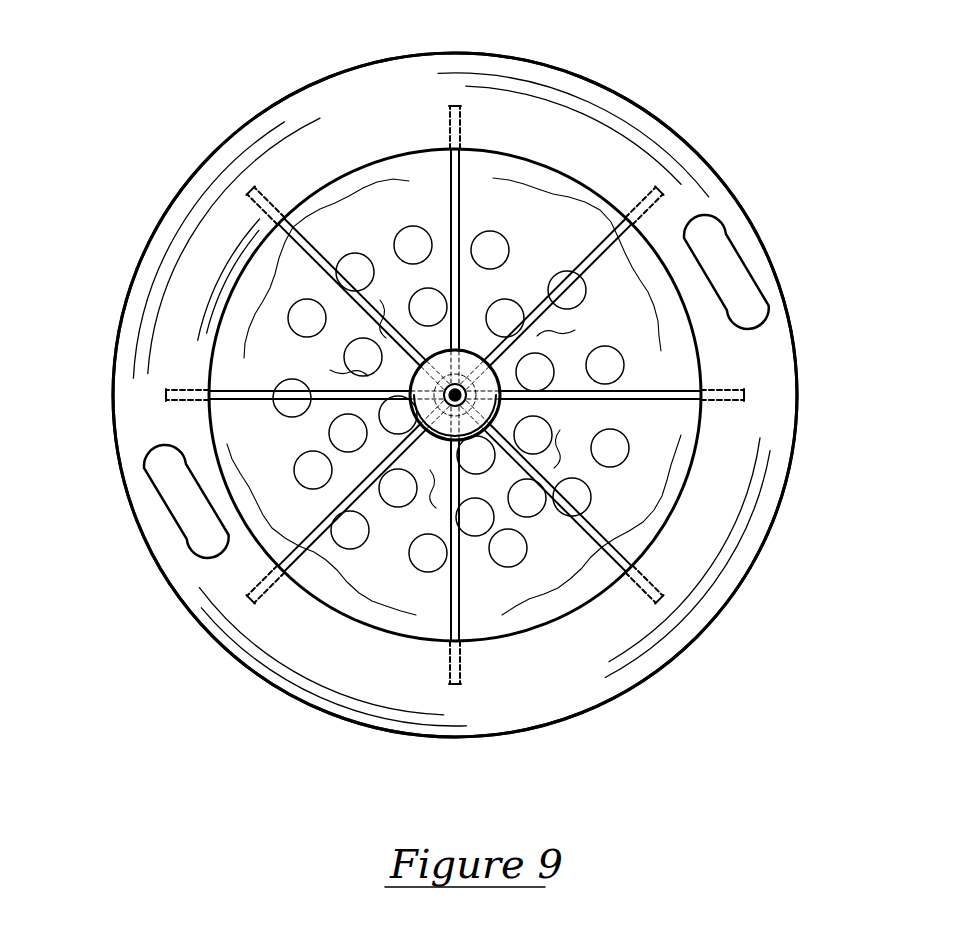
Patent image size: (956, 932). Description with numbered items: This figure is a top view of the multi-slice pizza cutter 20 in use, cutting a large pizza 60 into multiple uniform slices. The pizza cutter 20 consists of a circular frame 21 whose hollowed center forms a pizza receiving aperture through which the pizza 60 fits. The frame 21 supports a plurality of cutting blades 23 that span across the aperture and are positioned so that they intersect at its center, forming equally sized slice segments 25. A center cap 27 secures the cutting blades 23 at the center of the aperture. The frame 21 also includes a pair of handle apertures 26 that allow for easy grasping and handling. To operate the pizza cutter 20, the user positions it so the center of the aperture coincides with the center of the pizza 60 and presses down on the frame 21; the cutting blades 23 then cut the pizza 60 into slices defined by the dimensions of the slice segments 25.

The pizza cutter 20 is at (195, 77).
The circular frame 21 is at (168, 315).
The cutting blades 23 is at (583, 527).
The slice segments 25 is at (275, 503).
The handle apertures 26 is at (720, 257).
The center cap 27 is at (488, 405).
The pizza 60 is at (503, 238).